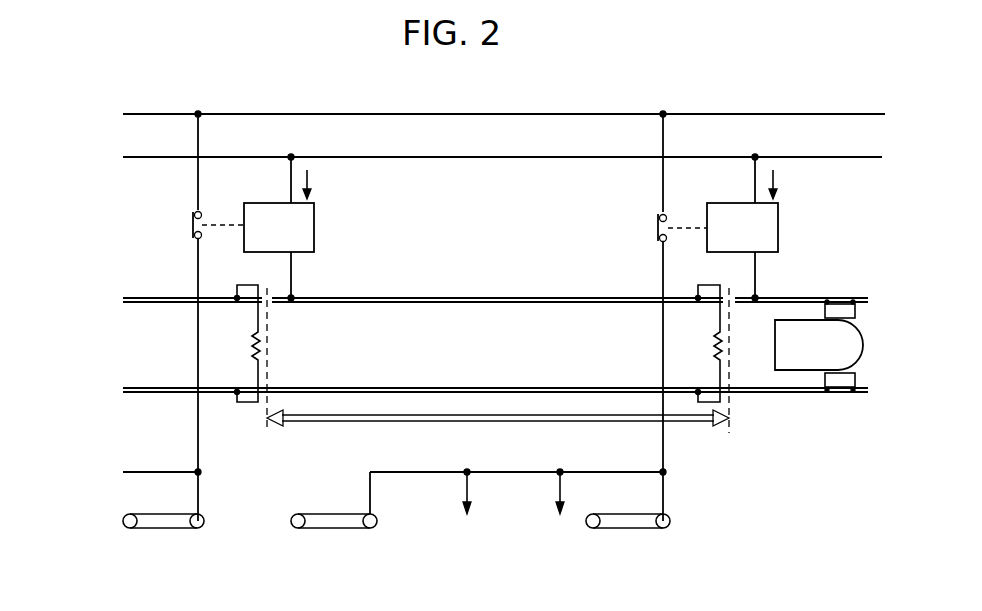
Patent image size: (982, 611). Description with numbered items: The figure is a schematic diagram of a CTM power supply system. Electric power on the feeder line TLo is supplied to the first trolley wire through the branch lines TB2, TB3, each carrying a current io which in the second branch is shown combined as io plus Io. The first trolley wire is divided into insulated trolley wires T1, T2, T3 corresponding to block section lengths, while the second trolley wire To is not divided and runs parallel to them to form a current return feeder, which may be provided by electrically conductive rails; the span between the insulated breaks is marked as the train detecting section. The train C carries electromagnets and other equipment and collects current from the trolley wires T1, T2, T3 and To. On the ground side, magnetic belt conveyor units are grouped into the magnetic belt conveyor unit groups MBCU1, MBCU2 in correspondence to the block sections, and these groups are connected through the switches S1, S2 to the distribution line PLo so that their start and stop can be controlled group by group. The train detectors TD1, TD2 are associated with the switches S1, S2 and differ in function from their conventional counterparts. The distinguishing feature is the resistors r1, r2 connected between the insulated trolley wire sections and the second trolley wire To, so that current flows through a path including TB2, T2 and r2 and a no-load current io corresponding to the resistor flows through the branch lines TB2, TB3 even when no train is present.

The distribution line PLo is at (504, 103).
The feeder line TLo is at (502, 146).
The switch S1 is at (200, 317).
The switch S2 is at (656, 317).
The train detector TD1 is at (322, 231).
The train detector TD2 is at (787, 231).
The no-load current io is at (316, 184).
The current io+ Io is at (800, 184).
The branch line TB2 is at (309, 282).
The branch line TB3 is at (773, 282).
The trolley wire T1 is at (192, 288).
The trolley wire T2 is at (497, 288).
The trolley wire T3 is at (801, 287).
The second trolley wire To is at (495, 379).
The resistor r1 is at (265, 357).
The resistor r2 is at (724, 359).
The train C is at (815, 415).
The train detecting section is at (498, 427).
The magnetic belt conveyor unit group MBCU1 is at (169, 515).
The magnetic belt conveyor unit group MBCU2 is at (480, 515).